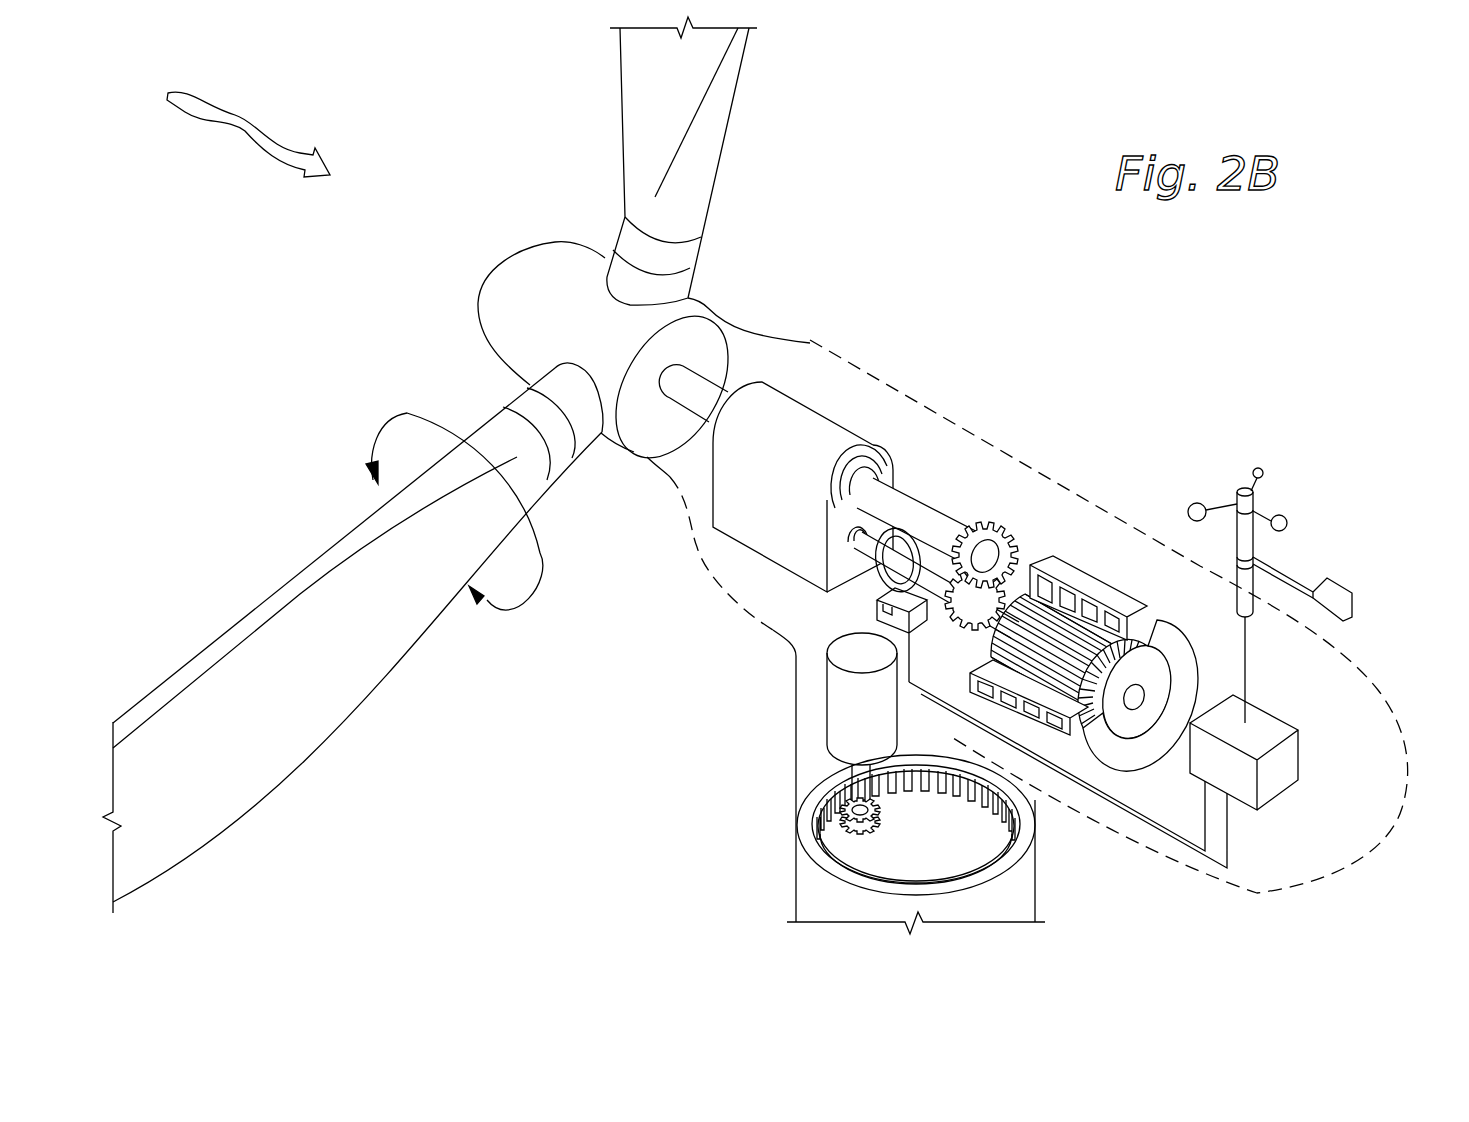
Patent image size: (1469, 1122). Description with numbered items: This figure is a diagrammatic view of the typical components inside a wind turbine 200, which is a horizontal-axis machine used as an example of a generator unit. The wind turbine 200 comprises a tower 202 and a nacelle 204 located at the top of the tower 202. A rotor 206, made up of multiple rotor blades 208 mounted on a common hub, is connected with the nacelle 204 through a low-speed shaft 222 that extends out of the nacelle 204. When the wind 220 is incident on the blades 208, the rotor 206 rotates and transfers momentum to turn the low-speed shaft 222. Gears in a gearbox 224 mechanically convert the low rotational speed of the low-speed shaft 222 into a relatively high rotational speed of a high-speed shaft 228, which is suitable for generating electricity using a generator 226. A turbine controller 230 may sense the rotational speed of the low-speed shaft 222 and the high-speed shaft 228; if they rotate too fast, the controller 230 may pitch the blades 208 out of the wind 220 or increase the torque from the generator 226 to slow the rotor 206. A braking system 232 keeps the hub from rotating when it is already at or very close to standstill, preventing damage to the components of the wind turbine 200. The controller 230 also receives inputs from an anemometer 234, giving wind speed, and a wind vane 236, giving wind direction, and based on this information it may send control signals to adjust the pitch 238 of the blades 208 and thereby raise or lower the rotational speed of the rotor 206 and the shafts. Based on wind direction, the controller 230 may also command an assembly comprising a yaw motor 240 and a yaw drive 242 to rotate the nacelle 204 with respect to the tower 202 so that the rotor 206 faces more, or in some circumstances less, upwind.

The wind turbine 200 is at (1097, 322).
The tower 202 is at (796, 882).
The nacelle 204 is at (1383, 838).
The rotor 206 is at (471, 255).
The rotor blades 208 is at (620, 77).
The wind 220 is at (221, 108).
The low-speed shaft 222 is at (908, 504).
The gearbox 224 is at (992, 514).
The generator 226 is at (1082, 583).
The high-speed shaft 228 is at (1000, 623).
The turbine controller 230 is at (1268, 723).
The braking system 232 is at (878, 604).
The anemometer 234 is at (1262, 468).
The wind vane 236 is at (1336, 583).
The pitch 238 is at (382, 418).
The yaw motor 240 is at (842, 700).
The yaw drive 242 is at (820, 806).